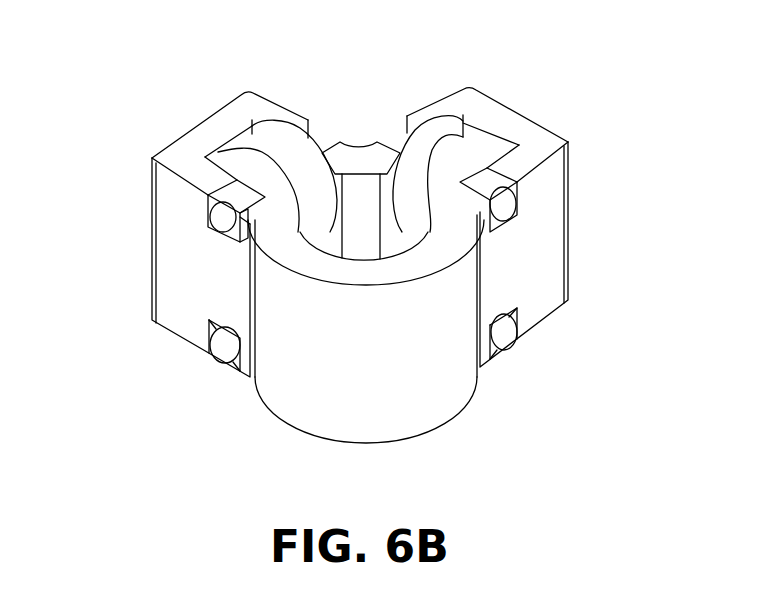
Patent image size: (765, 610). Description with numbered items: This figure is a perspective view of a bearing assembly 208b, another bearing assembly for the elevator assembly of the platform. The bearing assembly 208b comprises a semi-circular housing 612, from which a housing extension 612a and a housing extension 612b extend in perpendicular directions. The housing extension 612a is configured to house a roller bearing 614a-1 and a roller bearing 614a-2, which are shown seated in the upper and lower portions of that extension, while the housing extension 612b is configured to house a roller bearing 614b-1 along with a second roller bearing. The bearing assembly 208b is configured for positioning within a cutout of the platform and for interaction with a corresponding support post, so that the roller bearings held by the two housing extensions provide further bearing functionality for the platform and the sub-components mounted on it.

The bearing assembly 208b is at (165, 68).
The semi-circular housing 612 is at (463, 380).
The housing extension 612a is at (167, 240).
The housing extension 612b is at (553, 232).
The roller bearing 614a-1 is at (278, 142).
The roller bearing 614a-2 is at (223, 344).
The roller bearing 614b-1 is at (440, 128).